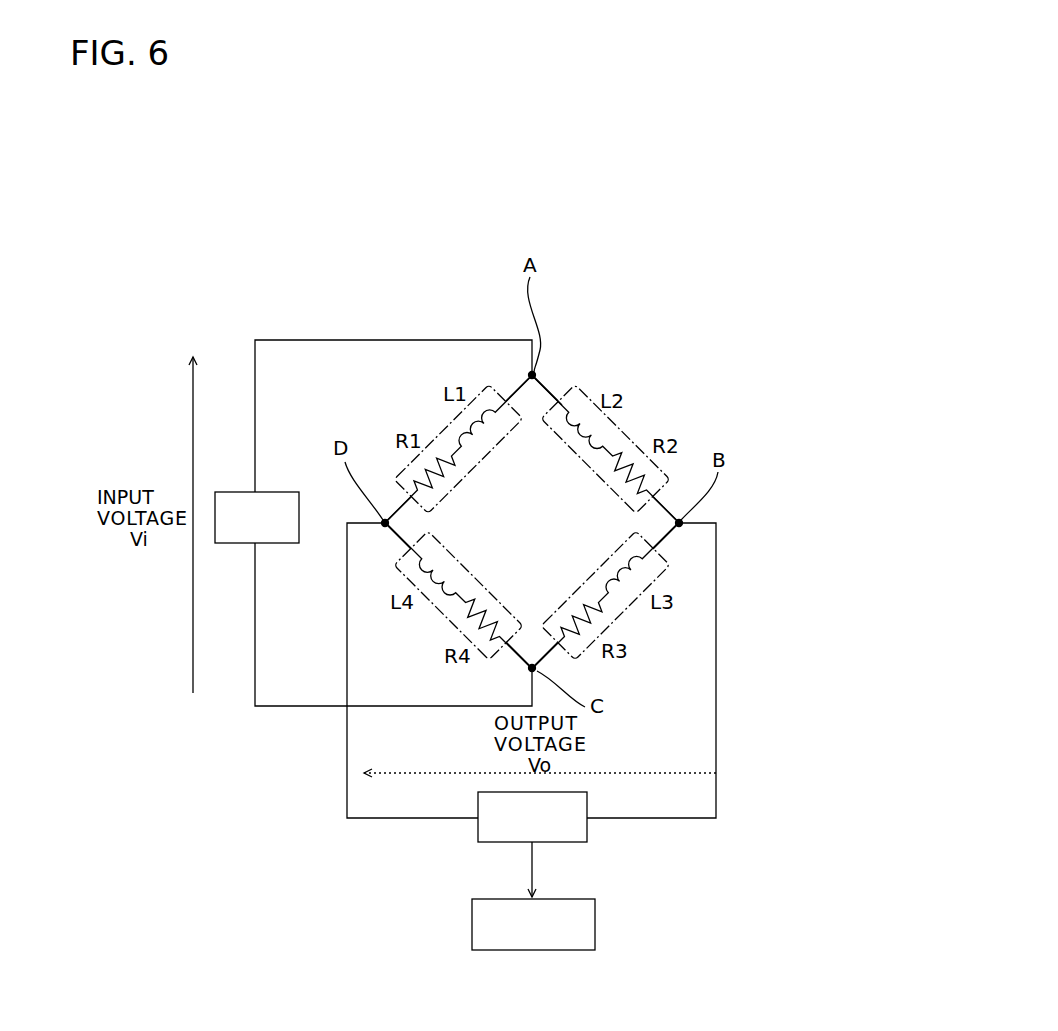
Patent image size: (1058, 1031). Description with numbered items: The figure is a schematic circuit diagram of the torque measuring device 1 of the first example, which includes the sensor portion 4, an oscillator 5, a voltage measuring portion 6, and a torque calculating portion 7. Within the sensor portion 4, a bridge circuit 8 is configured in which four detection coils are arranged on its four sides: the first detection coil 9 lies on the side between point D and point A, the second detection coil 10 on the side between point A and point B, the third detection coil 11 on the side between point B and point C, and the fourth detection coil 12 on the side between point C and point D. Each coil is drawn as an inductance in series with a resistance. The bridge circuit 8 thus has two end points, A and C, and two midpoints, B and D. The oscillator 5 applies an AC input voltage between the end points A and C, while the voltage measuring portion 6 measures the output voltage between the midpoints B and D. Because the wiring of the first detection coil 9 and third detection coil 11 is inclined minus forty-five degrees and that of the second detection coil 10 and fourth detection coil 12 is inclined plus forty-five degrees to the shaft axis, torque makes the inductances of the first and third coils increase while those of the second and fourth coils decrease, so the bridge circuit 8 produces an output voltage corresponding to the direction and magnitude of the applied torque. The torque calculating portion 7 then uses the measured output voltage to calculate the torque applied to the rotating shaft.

The torque measuring device 1 is at (573, 246).
The sensor portion 4 is at (642, 343).
The oscillator 5 is at (277, 492).
The voltage measuring portion 6 is at (587, 830).
The torque calculating portion 7 is at (472, 920).
The bridge circuit 8 is at (558, 381).
The first detection coil 9 is at (438, 430).
The second detection coil 10 is at (632, 432).
The third detection coil 11 is at (645, 648).
The fourth detection coil 12 is at (430, 625).